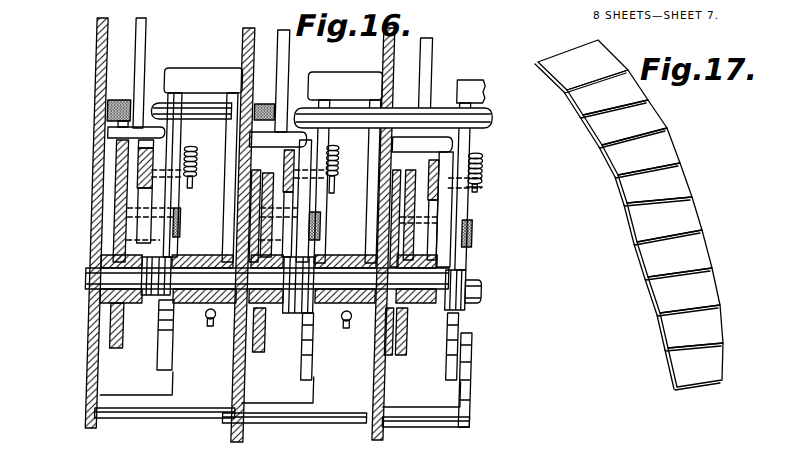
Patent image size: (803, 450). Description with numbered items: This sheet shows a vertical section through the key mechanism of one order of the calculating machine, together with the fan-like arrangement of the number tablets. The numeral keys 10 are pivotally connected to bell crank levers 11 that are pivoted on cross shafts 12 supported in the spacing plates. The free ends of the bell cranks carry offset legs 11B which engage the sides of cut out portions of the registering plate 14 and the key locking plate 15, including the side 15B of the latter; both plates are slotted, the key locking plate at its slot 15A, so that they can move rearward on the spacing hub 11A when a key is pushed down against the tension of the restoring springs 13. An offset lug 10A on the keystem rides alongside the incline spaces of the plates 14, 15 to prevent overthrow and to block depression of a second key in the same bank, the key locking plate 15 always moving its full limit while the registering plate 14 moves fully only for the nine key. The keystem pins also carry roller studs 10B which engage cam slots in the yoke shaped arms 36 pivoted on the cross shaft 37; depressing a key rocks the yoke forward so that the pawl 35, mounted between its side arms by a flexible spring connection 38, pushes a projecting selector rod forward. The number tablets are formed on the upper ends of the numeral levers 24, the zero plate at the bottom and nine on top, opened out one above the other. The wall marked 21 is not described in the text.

In FIG. 16, the numeral keys 10 is at (138, 53).
In FIG. 16, the offset lug 10A is at (405, 104).
In FIG. 16, the roller studs 10B is at (181, 224).
In FIG. 16, the bell crank levers 11 is at (157, 248).
In FIG. 16, the spacing hub 11A is at (150, 297).
In FIG. 16, the offset legs 11B is at (107, 133).
In FIG. 16, the cross shafts 12 is at (93, 274).
In FIG. 16, the restoring springs 13 is at (197, 143).
In FIG. 16, the registering plate 14 is at (227, 190).
In FIG. 16, the key locking plate 15 is at (112, 178).
In FIG. 16, the slot 15A is at (112, 302).
In FIG. 16, the side of cut out portion 15B is at (137, 150).
In FIG. 16, the frame wall 21 is at (383, 427).
In FIG. 17, the numeral levers 24 is at (622, 178).
In FIG. 16, the pawl 35 is at (212, 407).
In FIG. 16, the yoke shaped arms 36 is at (193, 78).
In FIG. 16, the cross shaft 37 is at (158, 108).
In FIG. 16, the spring connection 38 is at (209, 313).